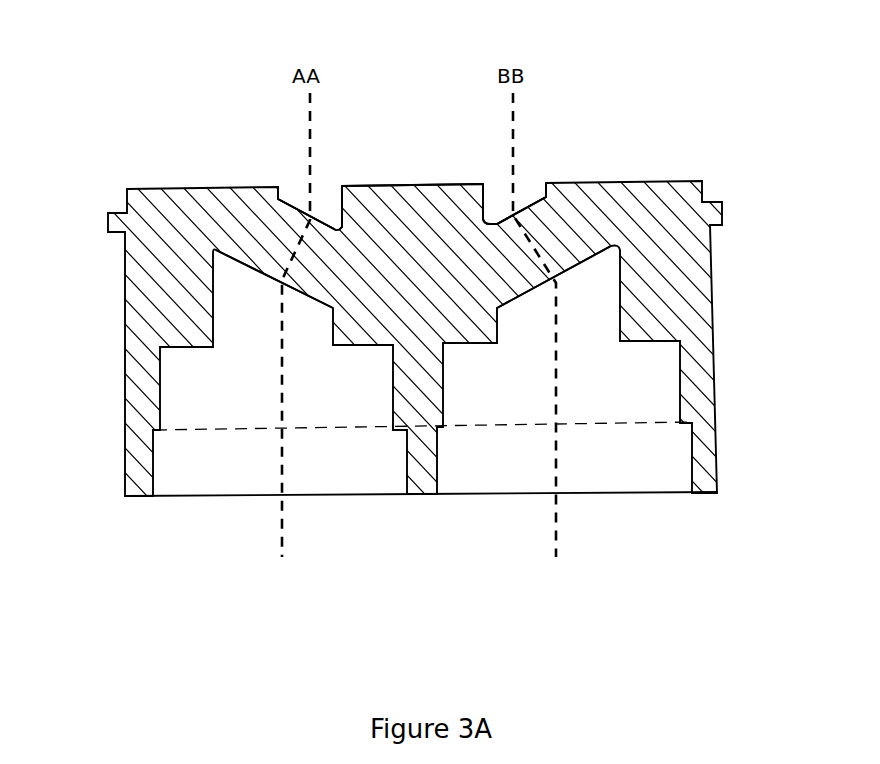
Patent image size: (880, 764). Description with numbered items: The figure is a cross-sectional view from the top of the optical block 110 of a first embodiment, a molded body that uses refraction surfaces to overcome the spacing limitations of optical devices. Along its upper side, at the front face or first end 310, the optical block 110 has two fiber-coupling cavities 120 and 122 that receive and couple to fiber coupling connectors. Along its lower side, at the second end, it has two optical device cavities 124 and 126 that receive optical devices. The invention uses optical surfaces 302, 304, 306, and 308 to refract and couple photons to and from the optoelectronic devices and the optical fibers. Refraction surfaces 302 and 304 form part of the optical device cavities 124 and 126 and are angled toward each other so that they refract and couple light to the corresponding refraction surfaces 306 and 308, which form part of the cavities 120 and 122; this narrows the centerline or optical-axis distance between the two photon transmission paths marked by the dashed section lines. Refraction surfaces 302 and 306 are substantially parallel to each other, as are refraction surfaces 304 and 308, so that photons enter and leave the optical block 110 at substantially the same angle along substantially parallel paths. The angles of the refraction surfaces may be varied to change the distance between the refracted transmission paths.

The optical block 110 is at (173, 95).
The cavity 122 is at (293, 191).
The cavity 120 is at (528, 185).
The front face or first end 310 is at (415, 186).
The refraction surface 308 is at (313, 216).
The refraction surface 306 is at (520, 209).
The refraction surface 304 is at (273, 278).
The refraction surface 302 is at (570, 266).
The cavity 126 is at (203, 497).
The cavity 124 is at (642, 490).